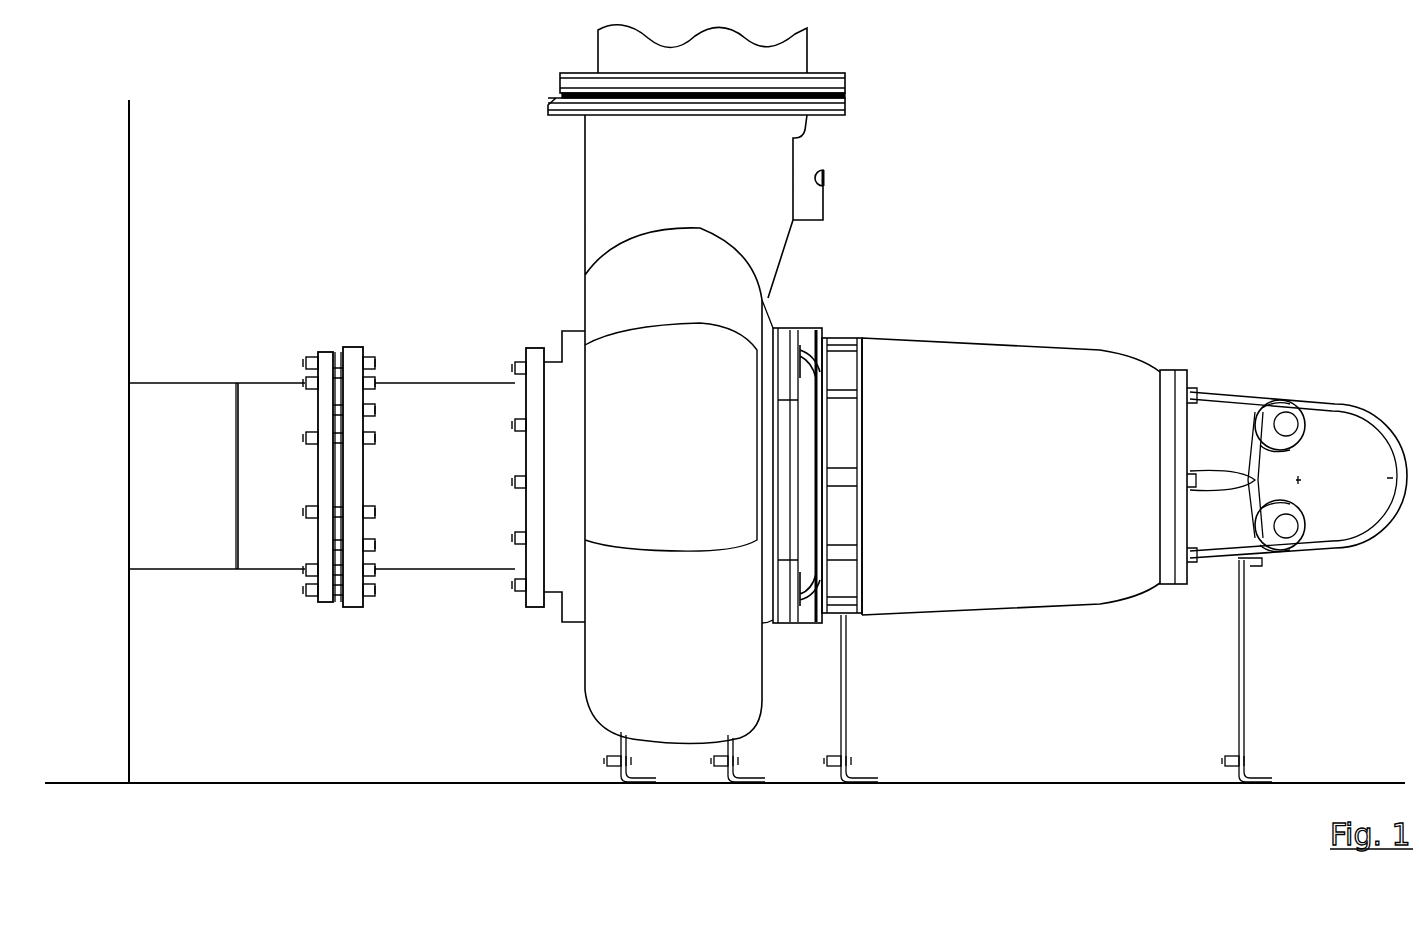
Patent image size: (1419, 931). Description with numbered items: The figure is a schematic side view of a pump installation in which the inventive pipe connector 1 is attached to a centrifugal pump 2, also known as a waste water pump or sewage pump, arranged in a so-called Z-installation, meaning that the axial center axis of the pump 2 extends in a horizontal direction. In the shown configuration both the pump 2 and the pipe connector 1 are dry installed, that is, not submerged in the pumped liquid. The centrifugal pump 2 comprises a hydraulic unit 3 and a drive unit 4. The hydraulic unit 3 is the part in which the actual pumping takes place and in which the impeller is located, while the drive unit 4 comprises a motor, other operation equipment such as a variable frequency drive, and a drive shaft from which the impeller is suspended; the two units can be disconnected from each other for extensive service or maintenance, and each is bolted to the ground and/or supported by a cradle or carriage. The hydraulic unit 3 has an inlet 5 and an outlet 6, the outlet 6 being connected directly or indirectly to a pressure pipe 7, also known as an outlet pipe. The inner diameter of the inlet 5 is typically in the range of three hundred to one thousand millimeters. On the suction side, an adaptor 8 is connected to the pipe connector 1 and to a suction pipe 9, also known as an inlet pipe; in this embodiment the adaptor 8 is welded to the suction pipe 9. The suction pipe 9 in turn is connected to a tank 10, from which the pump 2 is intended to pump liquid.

The pipe connector 1 is at (440, 338).
The centrifugal pump 2 is at (1134, 459).
The hydraulic unit 3 is at (780, 292).
The drive unit 4 is at (996, 328).
The inlet 5 is at (563, 408).
The outlet 6 is at (618, 136).
The pressure pipe 7 is at (613, 40).
The adaptor 8 is at (272, 340).
The suction pipe 9 is at (178, 397).
The tank 10 is at (110, 218).